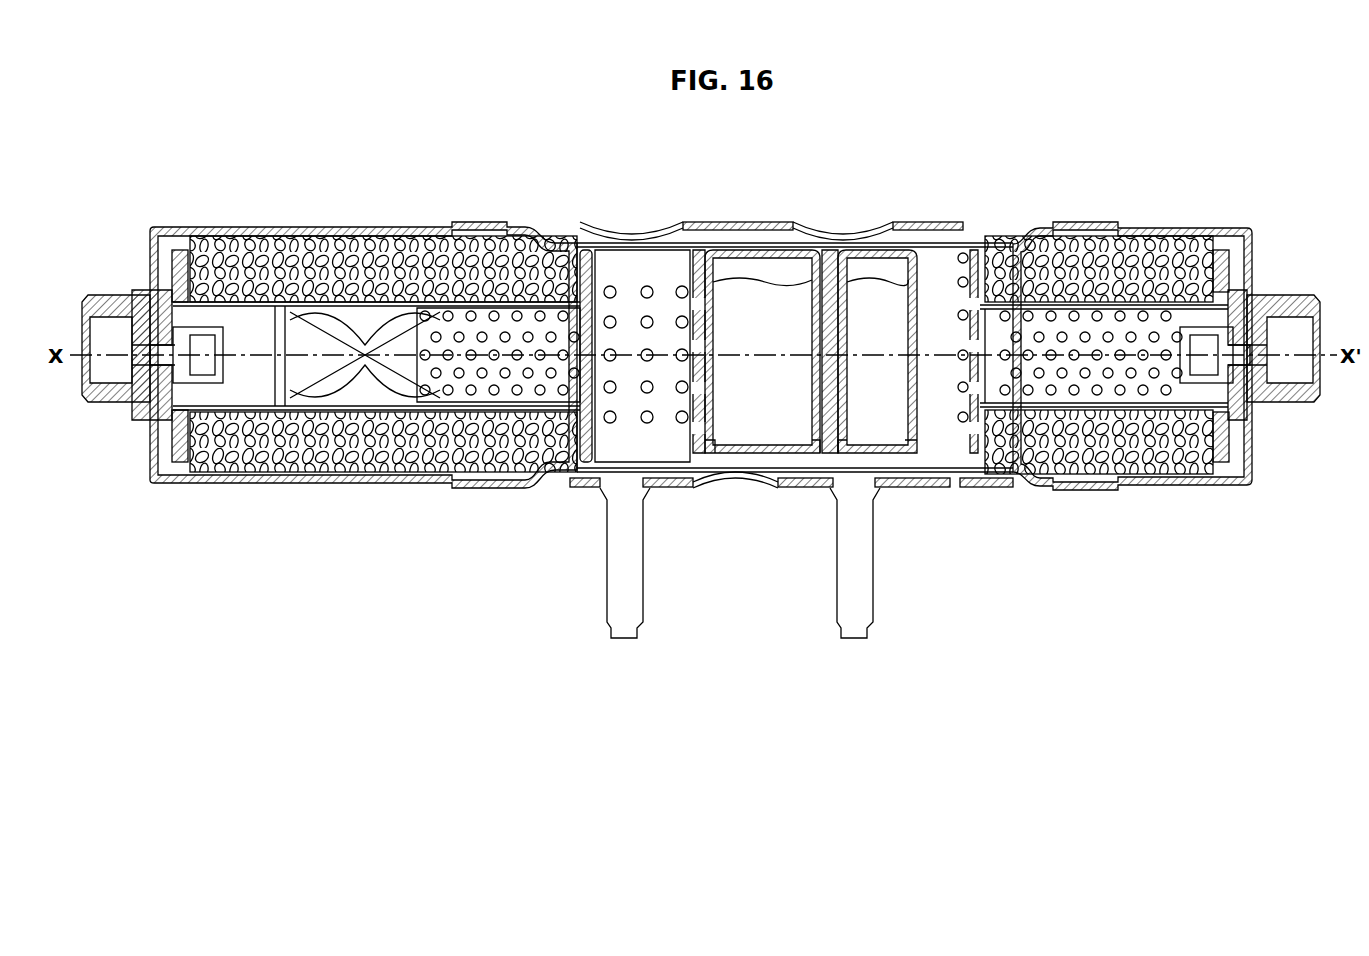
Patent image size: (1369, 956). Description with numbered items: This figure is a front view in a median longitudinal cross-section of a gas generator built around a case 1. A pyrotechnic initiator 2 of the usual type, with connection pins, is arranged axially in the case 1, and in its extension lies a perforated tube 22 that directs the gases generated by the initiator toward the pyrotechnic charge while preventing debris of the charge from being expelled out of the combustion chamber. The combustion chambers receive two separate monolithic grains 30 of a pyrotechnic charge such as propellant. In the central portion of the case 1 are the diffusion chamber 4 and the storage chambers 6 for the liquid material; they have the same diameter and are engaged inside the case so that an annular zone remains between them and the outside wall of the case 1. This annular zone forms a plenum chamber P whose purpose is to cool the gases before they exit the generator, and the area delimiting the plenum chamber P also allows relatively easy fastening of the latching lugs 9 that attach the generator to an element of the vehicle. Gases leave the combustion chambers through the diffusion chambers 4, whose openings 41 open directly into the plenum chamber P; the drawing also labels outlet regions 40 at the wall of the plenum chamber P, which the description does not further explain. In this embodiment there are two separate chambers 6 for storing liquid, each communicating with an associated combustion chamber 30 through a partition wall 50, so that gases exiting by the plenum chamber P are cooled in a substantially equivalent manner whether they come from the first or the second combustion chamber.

The case 1 is at (802, 172).
The pyrotechnic initiator 2 is at (175, 330).
The diffusion chamber 4 is at (618, 372).
The storage chamber 6 is at (762, 252).
The latching lugs 9 is at (625, 575).
The perforated tube 22 is at (258, 390).
The monolithic grains of pyrotechnic charge 30 is at (265, 250).
The rupture disc / dome 40 is at (635, 223).
The openings 41 is at (647, 420).
The partition wall 50 is at (700, 440).
The plenum chamber P is at (722, 238).